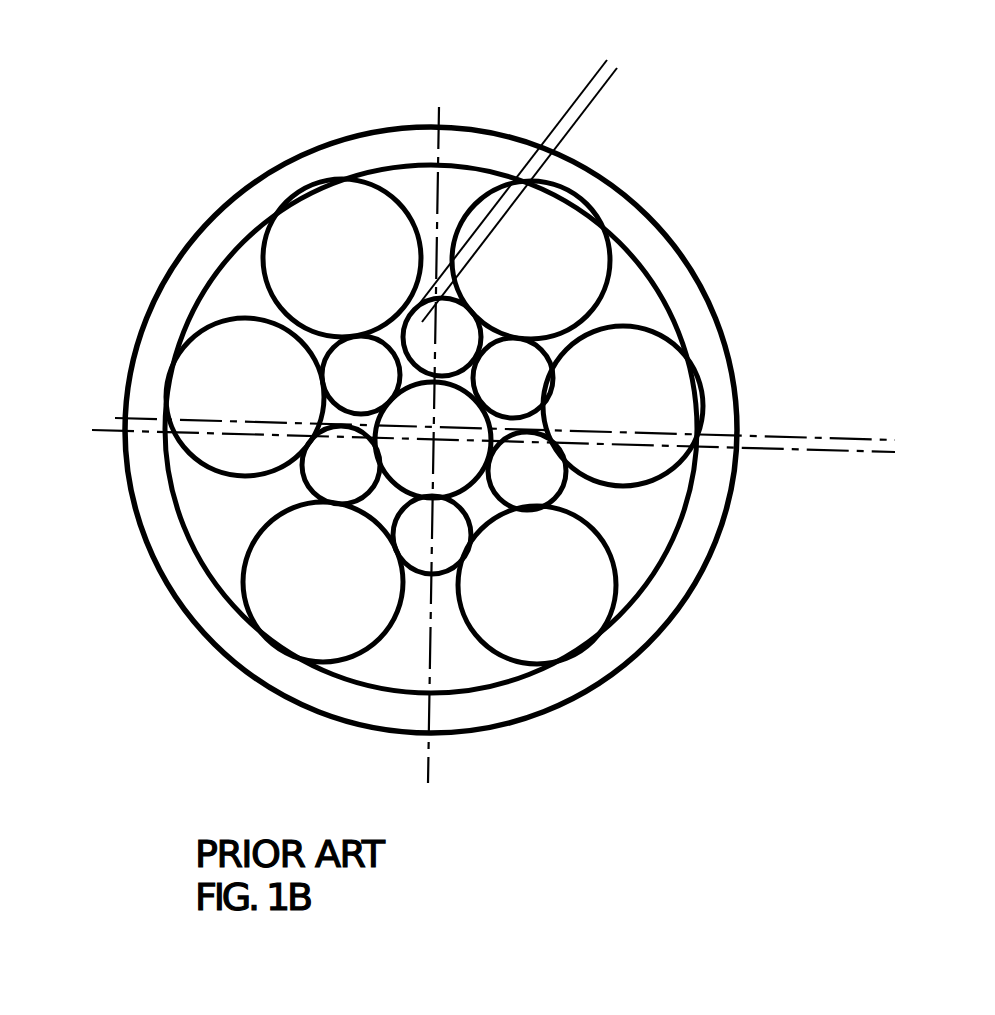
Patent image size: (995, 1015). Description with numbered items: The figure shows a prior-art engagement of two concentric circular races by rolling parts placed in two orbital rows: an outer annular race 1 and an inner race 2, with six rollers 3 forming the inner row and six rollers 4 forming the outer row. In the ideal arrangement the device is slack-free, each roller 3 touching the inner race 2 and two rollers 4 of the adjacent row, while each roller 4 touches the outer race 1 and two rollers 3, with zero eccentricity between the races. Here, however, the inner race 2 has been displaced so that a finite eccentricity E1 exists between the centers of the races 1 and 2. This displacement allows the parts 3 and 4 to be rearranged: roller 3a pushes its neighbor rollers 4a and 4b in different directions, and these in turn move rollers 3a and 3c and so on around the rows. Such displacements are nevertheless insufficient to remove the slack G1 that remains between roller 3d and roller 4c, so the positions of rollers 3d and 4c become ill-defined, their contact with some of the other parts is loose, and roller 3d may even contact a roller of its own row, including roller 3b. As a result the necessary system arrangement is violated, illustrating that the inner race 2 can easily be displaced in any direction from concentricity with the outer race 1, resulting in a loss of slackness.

The outer annular race 1 is at (173, 293).
The inner race 2 is at (433, 440).
The rollers in the inner row 3 is at (439, 450).
The roller 3a is at (432, 575).
The roller 3b is at (545, 505).
The roller 3c is at (320, 472).
The roller 3d is at (447, 342).
The rollers in the outer row 4 is at (434, 333).
The roller 4a is at (323, 582).
The roller 4b is at (537, 585).
The roller 4c is at (342, 258).
The slack G1 is at (560, 22).
The eccentricity E1 is at (818, 495).